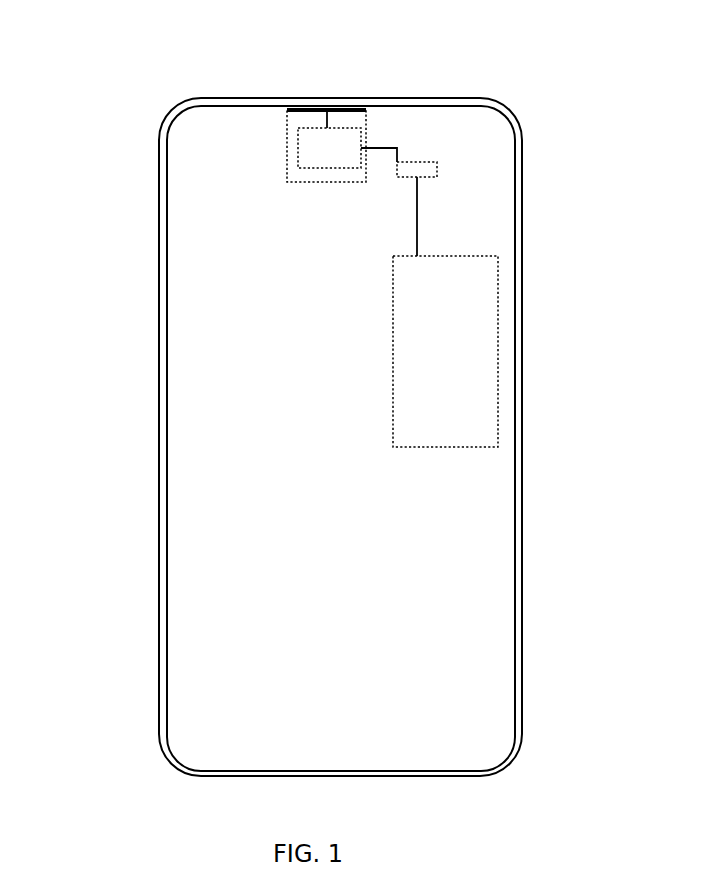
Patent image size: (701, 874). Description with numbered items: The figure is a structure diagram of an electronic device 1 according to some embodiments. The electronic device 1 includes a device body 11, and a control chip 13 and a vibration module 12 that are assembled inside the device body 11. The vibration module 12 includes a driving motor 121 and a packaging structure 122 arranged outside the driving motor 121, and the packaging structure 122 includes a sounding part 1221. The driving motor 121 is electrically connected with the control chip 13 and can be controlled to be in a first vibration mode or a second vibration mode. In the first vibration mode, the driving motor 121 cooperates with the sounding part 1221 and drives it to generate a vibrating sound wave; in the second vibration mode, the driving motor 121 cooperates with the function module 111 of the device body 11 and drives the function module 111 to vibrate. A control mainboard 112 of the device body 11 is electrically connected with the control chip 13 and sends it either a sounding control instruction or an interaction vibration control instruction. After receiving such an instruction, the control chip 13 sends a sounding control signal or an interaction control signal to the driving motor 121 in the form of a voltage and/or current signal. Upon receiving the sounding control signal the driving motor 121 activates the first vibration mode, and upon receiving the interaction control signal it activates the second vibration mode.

The electronic device 1 is at (127, 62).
The device body 11 is at (387, 97).
The function module 111 is at (438, 106).
The control mainboard 112 is at (427, 305).
The vibration module 12 is at (297, 118).
The driving motor 121 is at (333, 159).
The packaging structure 122 is at (302, 182).
The sounding part 1221 is at (312, 109).
The control chip 13 is at (428, 168).